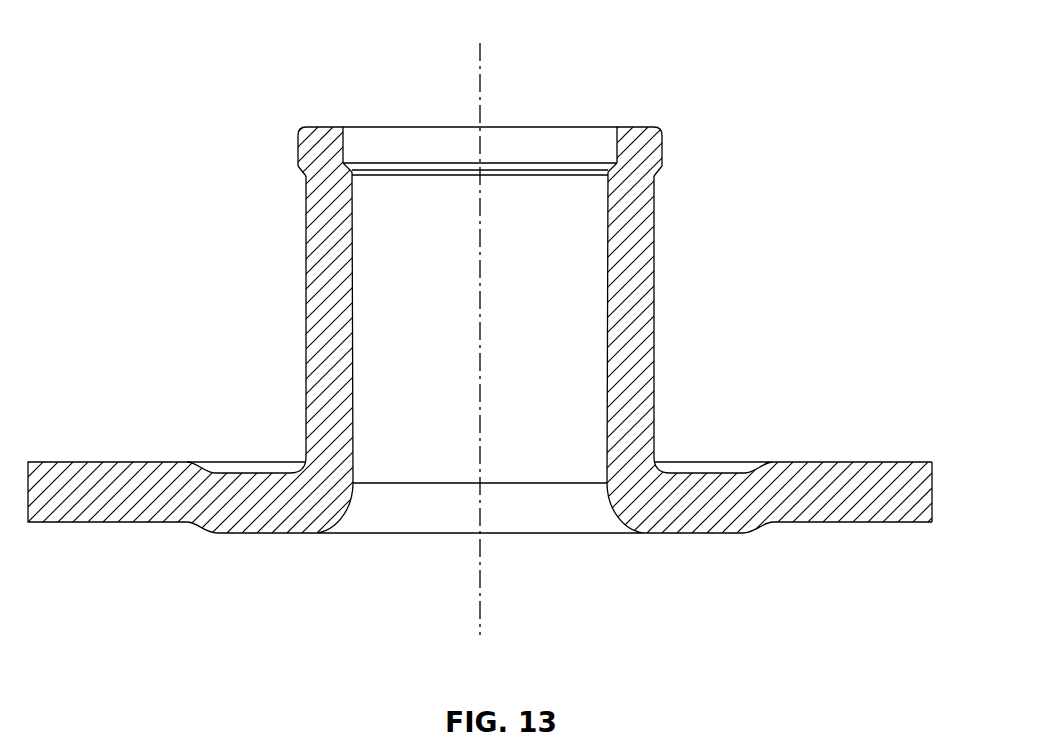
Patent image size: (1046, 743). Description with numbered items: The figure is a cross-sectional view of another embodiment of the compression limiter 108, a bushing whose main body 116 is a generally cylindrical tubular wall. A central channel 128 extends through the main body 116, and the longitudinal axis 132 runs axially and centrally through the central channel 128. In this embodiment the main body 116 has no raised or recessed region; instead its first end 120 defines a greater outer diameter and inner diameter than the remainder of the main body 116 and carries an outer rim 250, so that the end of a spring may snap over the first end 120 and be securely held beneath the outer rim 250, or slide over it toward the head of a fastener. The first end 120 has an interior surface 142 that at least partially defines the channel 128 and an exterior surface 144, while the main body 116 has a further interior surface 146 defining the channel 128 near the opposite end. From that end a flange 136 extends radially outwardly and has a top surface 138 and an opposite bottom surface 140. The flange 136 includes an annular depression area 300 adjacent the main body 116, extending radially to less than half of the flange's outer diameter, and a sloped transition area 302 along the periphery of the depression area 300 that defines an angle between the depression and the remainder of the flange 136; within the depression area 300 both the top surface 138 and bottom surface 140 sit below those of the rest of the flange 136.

The compression limiter 108 is at (87, 493).
The main body 116 is at (327, 362).
The first end 120 is at (323, 127).
The central channel 128 is at (424, 492).
The longitudinal axis 132 is at (480, 55).
The flange 136 is at (872, 490).
The top surface 138 is at (813, 462).
The bottom surface 140 is at (833, 522).
The interior surface 142 is at (545, 153).
The exterior surface 144 is at (663, 152).
The interior surface 146 is at (393, 442).
The outer rim 250 is at (302, 170).
The annular depression area 300 is at (688, 452).
The sloped transition area 302 is at (695, 505).